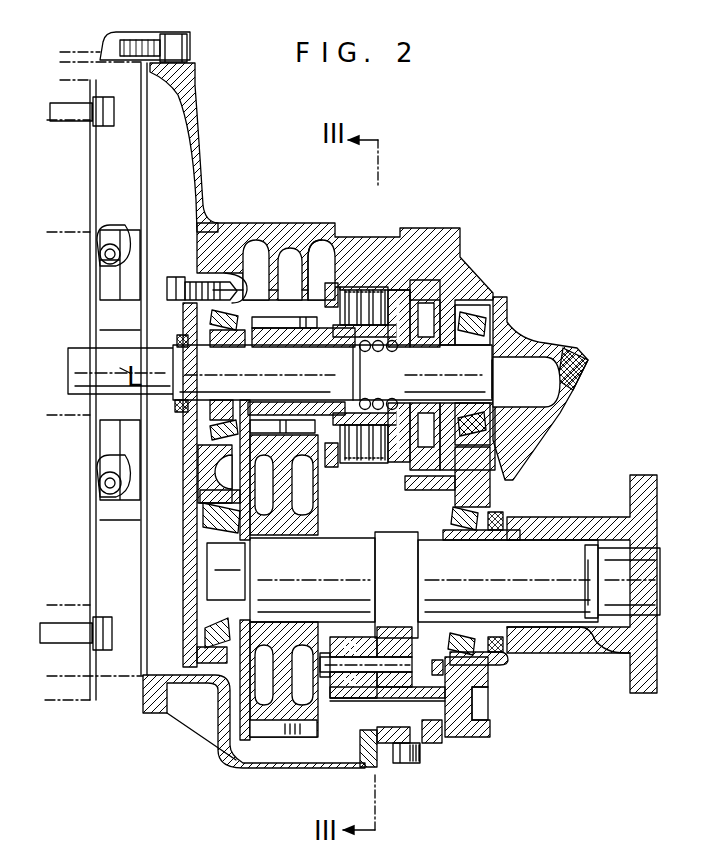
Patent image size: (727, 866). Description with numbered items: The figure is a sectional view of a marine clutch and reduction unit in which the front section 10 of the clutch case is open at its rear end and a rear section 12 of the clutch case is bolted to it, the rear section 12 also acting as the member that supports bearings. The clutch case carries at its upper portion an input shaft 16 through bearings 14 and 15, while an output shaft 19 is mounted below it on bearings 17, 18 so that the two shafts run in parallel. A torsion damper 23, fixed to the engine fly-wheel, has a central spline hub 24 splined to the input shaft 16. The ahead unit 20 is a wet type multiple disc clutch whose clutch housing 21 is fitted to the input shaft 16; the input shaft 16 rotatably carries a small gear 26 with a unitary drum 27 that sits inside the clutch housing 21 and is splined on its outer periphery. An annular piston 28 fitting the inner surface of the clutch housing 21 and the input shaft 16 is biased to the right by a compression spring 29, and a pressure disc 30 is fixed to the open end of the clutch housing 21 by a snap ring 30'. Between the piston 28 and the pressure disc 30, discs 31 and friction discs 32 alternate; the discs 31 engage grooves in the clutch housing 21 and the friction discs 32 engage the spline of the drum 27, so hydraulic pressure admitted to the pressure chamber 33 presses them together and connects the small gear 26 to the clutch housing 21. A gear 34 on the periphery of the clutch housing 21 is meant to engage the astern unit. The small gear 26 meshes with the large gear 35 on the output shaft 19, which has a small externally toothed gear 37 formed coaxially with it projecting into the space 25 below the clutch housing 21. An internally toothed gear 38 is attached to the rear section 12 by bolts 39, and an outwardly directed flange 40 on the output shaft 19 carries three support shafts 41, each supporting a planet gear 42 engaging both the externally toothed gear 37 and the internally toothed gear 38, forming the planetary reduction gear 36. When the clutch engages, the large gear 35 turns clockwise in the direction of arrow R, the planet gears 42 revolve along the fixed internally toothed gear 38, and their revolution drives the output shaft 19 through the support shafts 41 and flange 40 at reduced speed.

The front section of the clutch case 10 is at (232, 758).
The rear section of the clutch case 12 is at (430, 745).
The bearing 14 is at (240, 322).
The bearing 15 is at (504, 358).
The input shaft 16 is at (163, 390).
The bearing 17 is at (205, 635).
The bearing 18 is at (492, 668).
The output shaft 19 is at (534, 556).
The ahead unit 20 is at (300, 278).
The clutch housing 21 is at (488, 340).
The torsion damper 23 is at (108, 243).
The central spline hub 24 is at (78, 342).
The space 25 is at (455, 738).
The small gear 26 is at (285, 320).
The drum 27 is at (342, 347).
The annular piston 28 is at (450, 320).
The compression spring 29 is at (380, 352).
The pressure disc 30 is at (361, 330).
The snap ring 30' is at (315, 238).
The discs 31 is at (365, 292).
The friction discs 32 is at (395, 292).
The pressure chamber 33 is at (472, 330).
The gear 34 is at (425, 283).
The large gear 35 is at (266, 737).
The planetary gear type reduction gear 36 is at (348, 710).
The externally toothed gear 37 is at (346, 540).
The internally toothed gear 38 is at (383, 700).
The bolts 39 is at (489, 700).
The flange 40 is at (393, 544).
The support shafts 41 is at (422, 760).
The planet gear 42 is at (328, 690).
The arrow R is at (552, 605).